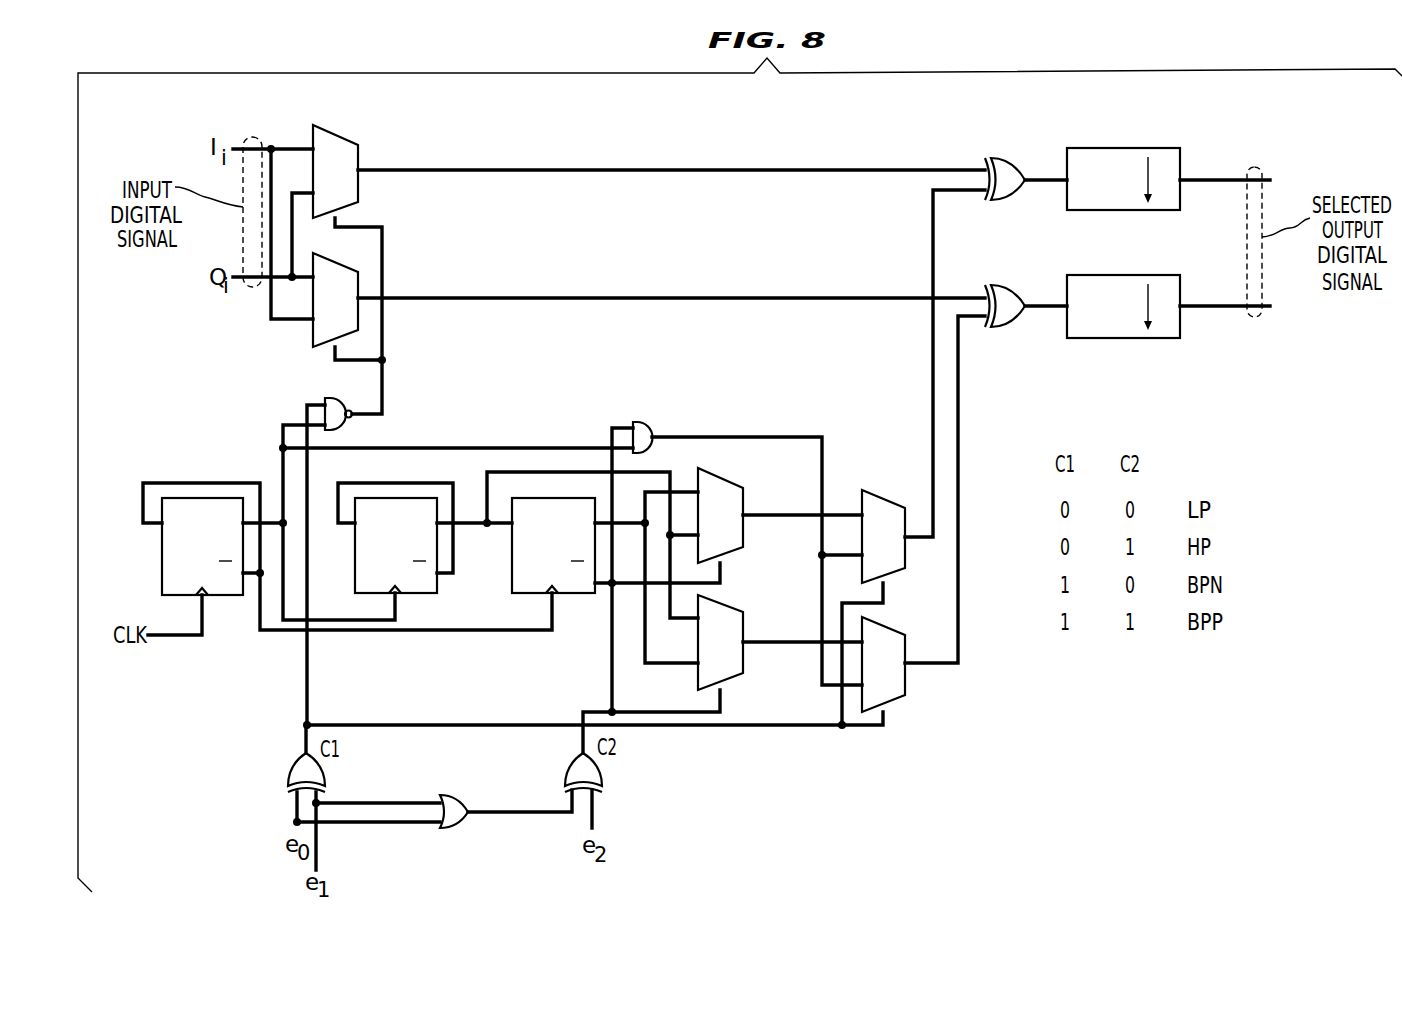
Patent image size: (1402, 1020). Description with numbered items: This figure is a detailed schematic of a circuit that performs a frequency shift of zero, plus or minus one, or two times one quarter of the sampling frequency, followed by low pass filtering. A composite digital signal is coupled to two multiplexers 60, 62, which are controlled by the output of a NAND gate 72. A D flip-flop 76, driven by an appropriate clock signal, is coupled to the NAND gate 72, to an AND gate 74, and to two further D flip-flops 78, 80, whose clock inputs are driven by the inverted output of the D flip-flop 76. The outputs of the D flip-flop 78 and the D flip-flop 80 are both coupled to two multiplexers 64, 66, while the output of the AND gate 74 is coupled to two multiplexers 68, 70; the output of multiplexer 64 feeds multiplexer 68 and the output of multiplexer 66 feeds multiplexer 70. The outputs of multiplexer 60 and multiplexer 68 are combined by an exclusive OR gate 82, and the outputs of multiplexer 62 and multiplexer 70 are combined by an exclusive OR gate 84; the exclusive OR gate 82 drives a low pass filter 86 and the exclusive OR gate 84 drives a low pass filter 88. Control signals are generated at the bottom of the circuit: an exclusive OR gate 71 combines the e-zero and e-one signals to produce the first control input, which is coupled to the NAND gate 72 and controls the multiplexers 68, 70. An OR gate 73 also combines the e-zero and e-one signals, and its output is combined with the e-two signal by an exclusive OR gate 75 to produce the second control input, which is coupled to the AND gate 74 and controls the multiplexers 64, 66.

The multiplexer 60 is at (338, 128).
The multiplexer 62 is at (345, 263).
The multiplexer 64 is at (725, 470).
The multiplexer 66 is at (725, 598).
The multiplexer 68 is at (885, 493).
The multiplexer 70 is at (893, 620).
The exclusive OR gate 71 is at (292, 765).
The NAND gate 72 is at (333, 398).
The OR gate 73 is at (453, 795).
The AND gate 74 is at (639, 422).
The exclusive OR gate 75 is at (600, 768).
The D flip-flop 76 is at (162, 577).
The D flip-flop 78 is at (418, 593).
The D flip-flop 80 is at (572, 593).
The exclusive OR gate 82 is at (1002, 158).
The exclusive OR gate 84 is at (1002, 285).
The low pass filter 86 is at (1135, 148).
The low pass filter 88 is at (1122, 275).